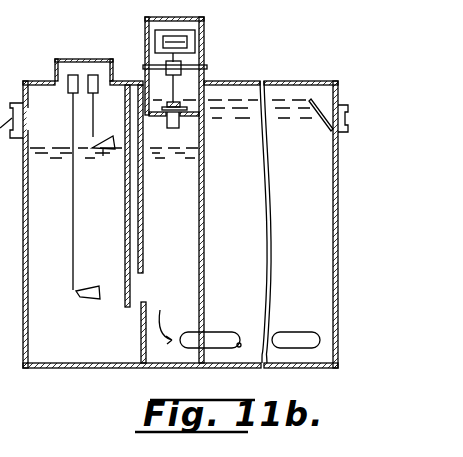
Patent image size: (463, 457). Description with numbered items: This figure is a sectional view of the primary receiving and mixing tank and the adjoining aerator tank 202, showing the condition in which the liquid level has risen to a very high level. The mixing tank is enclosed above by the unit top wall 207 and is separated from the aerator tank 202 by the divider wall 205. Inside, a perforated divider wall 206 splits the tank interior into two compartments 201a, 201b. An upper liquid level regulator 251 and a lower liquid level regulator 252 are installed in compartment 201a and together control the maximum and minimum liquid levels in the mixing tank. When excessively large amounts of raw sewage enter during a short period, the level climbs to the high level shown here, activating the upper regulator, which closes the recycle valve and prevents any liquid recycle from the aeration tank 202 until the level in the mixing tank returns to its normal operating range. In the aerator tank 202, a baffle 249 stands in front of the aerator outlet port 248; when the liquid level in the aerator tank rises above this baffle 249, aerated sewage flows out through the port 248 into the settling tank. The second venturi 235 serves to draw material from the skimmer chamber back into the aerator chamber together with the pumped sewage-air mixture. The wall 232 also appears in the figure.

The compartment 201a is at (56, 247).
The compartment 201b is at (181, 215).
The aerator tank 202 is at (311, 223).
The divider wall 205 is at (204, 222).
The perforated divider wall 206 is at (124, 247).
The unit top wall 207 is at (295, 80).
The tank wall 232 is at (339, 252).
The second venturi 235 is at (143, 285).
The aerator outlet port 248 is at (349, 117).
The baffle 249 is at (322, 116).
The upper liquid level regulator 251 is at (103, 156).
The lower liquid level regulator 252 is at (95, 300).